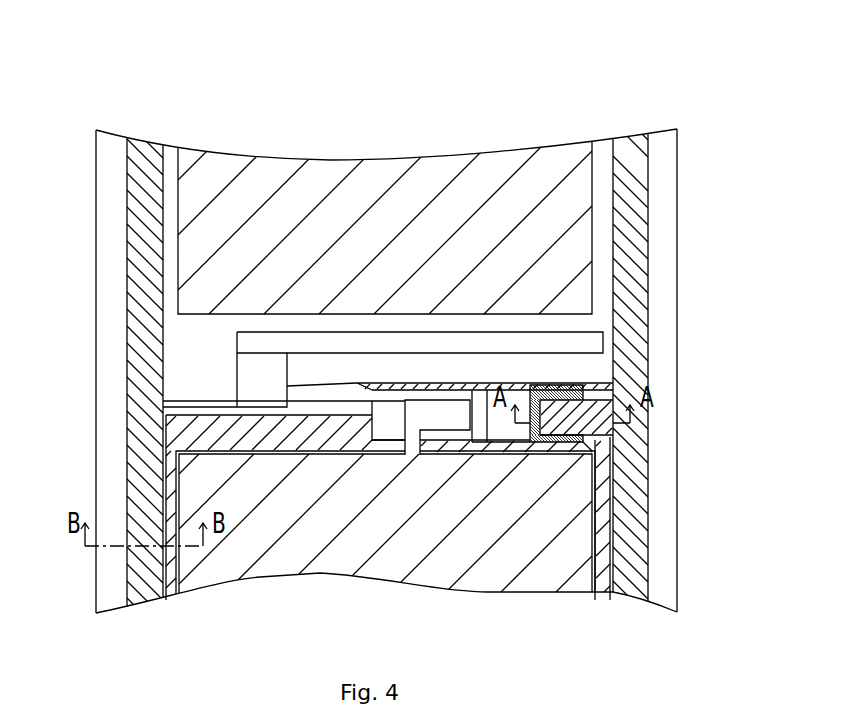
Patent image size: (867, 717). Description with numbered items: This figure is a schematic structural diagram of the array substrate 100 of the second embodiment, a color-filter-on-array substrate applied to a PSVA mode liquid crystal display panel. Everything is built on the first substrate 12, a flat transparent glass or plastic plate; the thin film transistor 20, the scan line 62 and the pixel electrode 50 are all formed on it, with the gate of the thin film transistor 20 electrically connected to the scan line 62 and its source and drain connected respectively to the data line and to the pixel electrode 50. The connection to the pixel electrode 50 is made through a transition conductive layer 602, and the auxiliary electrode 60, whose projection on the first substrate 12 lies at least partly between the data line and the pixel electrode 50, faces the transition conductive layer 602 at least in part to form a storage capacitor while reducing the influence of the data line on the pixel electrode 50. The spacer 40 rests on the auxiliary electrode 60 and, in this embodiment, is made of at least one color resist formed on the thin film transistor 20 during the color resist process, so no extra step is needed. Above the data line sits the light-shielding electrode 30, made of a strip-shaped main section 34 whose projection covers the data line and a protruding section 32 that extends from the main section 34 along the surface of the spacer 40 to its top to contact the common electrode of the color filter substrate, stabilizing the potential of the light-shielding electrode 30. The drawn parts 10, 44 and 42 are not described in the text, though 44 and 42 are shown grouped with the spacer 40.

The array substrate 100 is at (267, 112).
The first substrate 12 is at (110, 212).
The display panel body 10 is at (385, 217).
The thin film transistor 20 is at (245, 355).
The scan line 62 is at (588, 342).
The auxiliary electrode 60 is at (178, 432).
The transition conductive layer 602 is at (383, 430).
The pixel electrode 50 is at (537, 558).
The light-shielding electrode 30 is at (550, 347).
The protruding section 32 is at (614, 386).
The main section 34 is at (612, 400).
The spacer 40 is at (629, 453).
The contact pad 44 is at (560, 440).
The connecting portion 42 is at (580, 455).